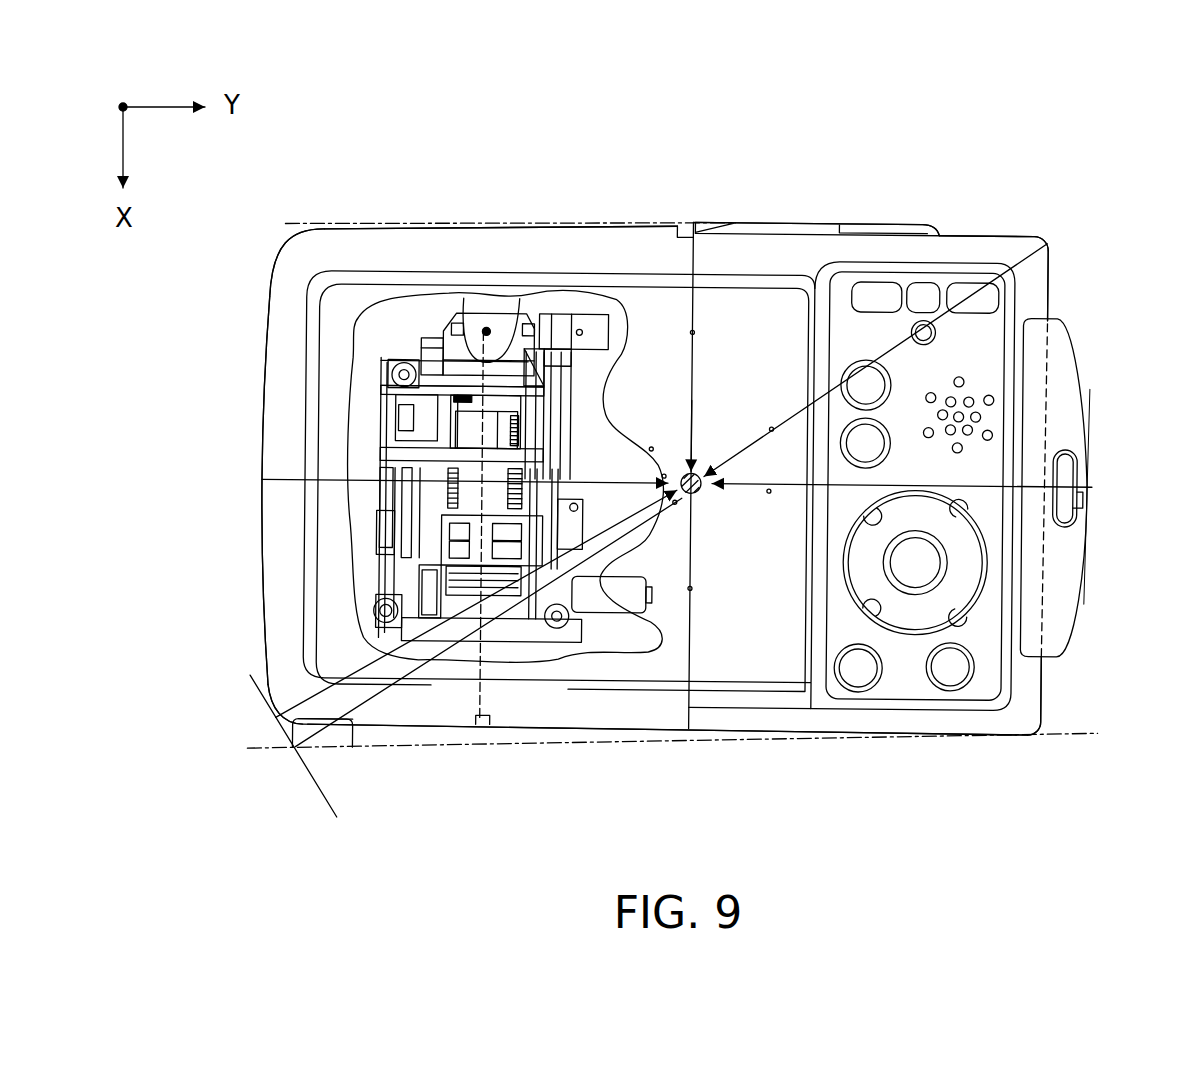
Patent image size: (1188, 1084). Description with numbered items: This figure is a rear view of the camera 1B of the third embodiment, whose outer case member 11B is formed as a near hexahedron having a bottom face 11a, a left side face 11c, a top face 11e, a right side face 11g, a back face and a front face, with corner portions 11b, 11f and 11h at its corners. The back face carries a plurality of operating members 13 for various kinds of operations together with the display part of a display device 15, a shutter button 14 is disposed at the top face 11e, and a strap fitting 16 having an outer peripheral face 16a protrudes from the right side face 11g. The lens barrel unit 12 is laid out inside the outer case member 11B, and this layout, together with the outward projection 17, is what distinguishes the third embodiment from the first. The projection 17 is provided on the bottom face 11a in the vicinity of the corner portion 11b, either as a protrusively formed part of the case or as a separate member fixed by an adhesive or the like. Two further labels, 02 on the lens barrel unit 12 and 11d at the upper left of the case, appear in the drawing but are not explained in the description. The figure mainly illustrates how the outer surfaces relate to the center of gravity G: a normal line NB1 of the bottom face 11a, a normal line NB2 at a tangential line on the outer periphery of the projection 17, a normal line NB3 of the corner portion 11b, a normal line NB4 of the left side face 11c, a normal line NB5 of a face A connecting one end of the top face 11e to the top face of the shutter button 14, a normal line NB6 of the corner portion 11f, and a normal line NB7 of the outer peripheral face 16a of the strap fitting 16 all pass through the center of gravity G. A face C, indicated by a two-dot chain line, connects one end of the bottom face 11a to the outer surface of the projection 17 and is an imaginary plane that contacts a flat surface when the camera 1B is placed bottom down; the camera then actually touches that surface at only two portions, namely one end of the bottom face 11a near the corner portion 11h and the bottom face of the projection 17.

The camera 1B is at (1038, 161).
The optical axis 02 is at (484, 329).
The lens barrel unit 12 is at (506, 318).
The bottom face 11a is at (533, 735).
The corner portion 11b is at (276, 724).
The left side face 11c is at (256, 492).
The upper left corner of housing 11d is at (283, 247).
The top face 11e is at (593, 221).
The corner portion 11f is at (1050, 234).
The right side face 11g is at (1053, 290).
The corner portion 11h is at (1048, 718).
The outer case member 11B is at (651, 245).
The operating members 13 is at (863, 430).
The shutter button 14 is at (892, 229).
The display device 15 is at (794, 310).
The strap fitting 16 is at (1068, 606).
The outer peripheral face 16a is at (1098, 482).
The outward projection 17 is at (342, 748).
The face A is at (716, 212).
The face C is at (722, 746).
The center of gravity G is at (703, 474).
The normal line NB1 is at (698, 588).
The normal line NB2 is at (672, 505).
The normal line NB3 is at (662, 474).
The normal line NB4 is at (650, 447).
The normal line NB5 is at (698, 331).
The normal line NB6 is at (770, 425).
The normal line NB7 is at (767, 492).